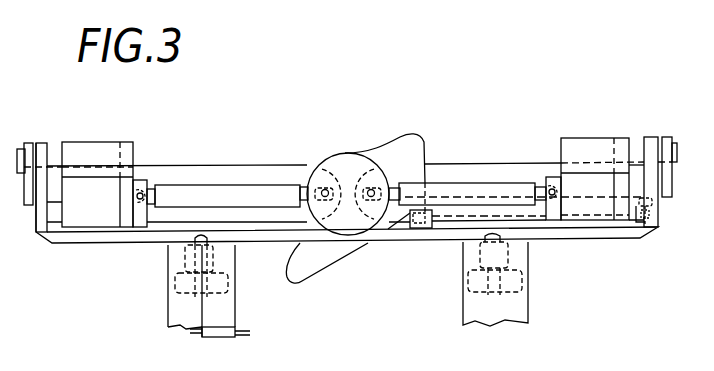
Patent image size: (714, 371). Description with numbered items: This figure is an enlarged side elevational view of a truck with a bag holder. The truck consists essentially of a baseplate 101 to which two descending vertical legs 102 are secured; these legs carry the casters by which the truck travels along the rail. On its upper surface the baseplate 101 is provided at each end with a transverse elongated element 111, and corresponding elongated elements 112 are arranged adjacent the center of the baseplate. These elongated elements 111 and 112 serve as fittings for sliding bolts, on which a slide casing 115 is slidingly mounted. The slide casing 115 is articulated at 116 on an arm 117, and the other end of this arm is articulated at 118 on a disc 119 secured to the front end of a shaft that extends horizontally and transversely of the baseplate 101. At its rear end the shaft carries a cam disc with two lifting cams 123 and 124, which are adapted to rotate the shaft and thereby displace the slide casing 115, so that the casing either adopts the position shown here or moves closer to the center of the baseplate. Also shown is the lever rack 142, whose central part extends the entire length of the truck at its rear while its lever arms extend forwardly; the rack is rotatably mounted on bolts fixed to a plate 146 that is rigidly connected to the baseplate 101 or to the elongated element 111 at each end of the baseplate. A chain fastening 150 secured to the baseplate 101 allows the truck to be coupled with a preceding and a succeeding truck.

The baseplate 101 is at (597, 232).
The descending vertical legs 102 is at (168, 308).
The transverse elongated element 111 is at (645, 222).
The elongated element 112 is at (425, 228).
The slide casing 115 is at (553, 178).
The articulation 116 is at (550, 188).
The arm 117 is at (445, 180).
The articulation 118 is at (371, 196).
The disc 119 is at (337, 158).
The lifting cam 123 is at (297, 277).
The lifting cam 124 is at (412, 138).
The lever rack 142 is at (217, 165).
The plate 146 is at (651, 140).
The chain fastening 150 is at (227, 333).